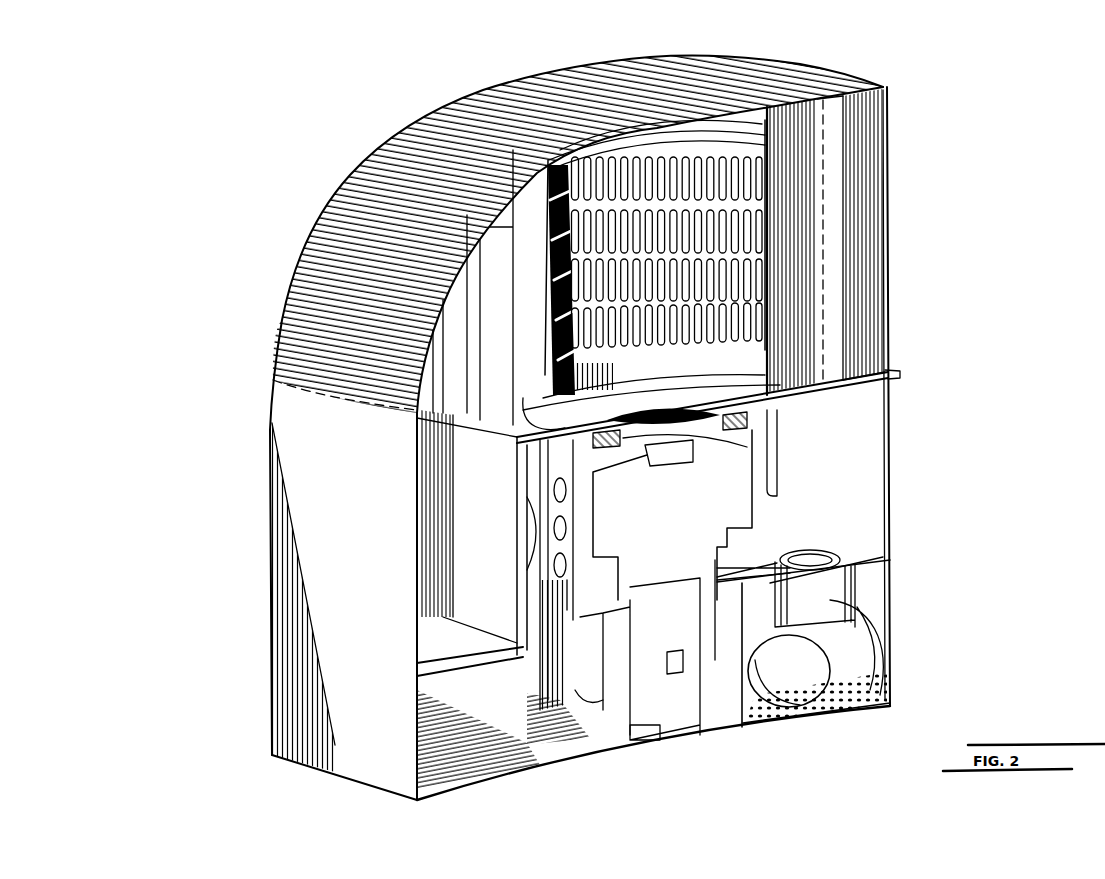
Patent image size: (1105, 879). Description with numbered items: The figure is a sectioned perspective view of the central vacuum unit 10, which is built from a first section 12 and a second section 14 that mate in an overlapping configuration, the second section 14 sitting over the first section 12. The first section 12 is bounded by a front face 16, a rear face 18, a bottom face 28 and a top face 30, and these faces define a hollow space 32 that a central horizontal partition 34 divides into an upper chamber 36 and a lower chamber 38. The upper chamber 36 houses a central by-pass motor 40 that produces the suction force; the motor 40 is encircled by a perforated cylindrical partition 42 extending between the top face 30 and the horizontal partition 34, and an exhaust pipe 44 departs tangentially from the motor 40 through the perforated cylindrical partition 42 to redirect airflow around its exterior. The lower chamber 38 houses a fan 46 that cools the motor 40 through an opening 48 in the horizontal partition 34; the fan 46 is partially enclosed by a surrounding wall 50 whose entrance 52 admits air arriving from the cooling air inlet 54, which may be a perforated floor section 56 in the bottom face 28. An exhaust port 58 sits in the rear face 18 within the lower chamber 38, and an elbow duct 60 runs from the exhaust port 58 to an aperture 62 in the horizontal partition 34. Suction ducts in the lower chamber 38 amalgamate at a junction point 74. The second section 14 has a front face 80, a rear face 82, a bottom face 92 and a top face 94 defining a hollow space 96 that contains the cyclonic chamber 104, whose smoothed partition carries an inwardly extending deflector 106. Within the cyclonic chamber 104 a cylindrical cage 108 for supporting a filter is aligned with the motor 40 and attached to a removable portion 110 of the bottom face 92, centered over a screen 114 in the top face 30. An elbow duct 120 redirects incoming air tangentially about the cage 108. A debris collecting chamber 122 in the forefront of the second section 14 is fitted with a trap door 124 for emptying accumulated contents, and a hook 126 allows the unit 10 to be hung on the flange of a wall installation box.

The central vacuum unit 10 is at (242, 272).
The first section 12 is at (924, 552).
The second section 14 is at (897, 207).
The front face 16 is at (277, 723).
The rear face 18 is at (893, 578).
The bottom face 28 is at (490, 778).
The top face 30 is at (865, 372).
The hollow space 32 is at (458, 742).
The central horizontal partition 34 is at (797, 540).
The upper chamber 36 is at (815, 472).
The lower chamber 38 is at (517, 710).
The central by-pass motor 40 is at (740, 495).
The perforated cylindrical partition 42 is at (556, 600).
The exhaust pipe 44 is at (530, 520).
The fan 46 is at (688, 727).
The opening 48 is at (594, 620).
The surrounding wall 50 is at (762, 715).
The entrance 52 is at (618, 737).
The cooling air inlet 54 is at (866, 716).
The perforated floor section 56 is at (842, 708).
The exhaust port 58 is at (890, 627).
The elbow duct 60 is at (845, 662).
The aperture 62 is at (838, 550).
The junction point 74 is at (783, 688).
The front face 80 is at (285, 437).
The rear face 82 is at (887, 130).
The bottom face 92 is at (843, 340).
The top face 94 is at (697, 67).
The hollow space 96 is at (828, 190).
The cyclonic chamber 104 is at (815, 266).
The deflector 106 is at (497, 253).
The cylindrical cage 108 is at (820, 100).
The removable portion 110 is at (902, 390).
The screen 114 is at (645, 395).
The elbow duct 120 is at (887, 240).
The debris collecting chamber 122 is at (437, 562).
The trap door 124 is at (435, 642).
The hook 126 is at (910, 356).